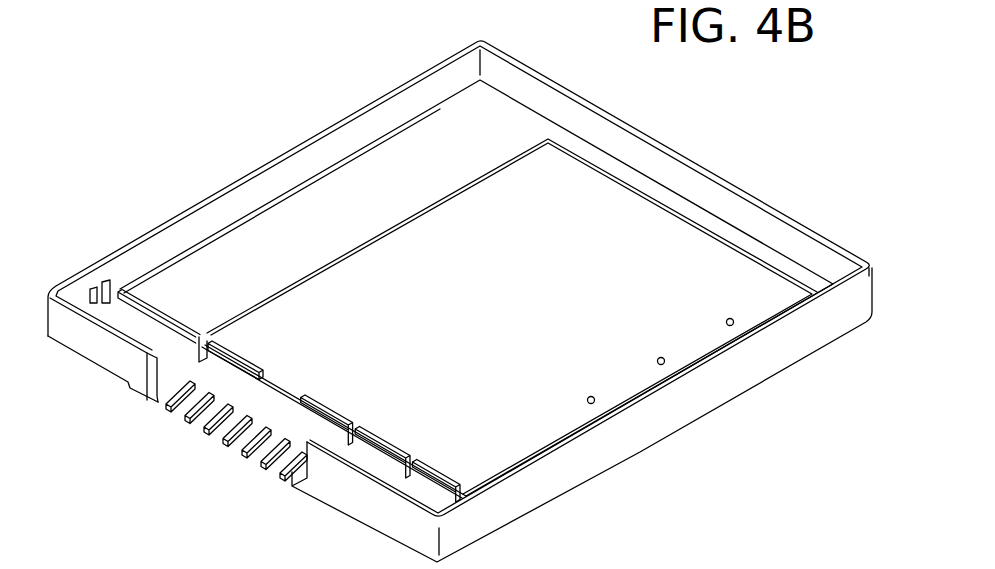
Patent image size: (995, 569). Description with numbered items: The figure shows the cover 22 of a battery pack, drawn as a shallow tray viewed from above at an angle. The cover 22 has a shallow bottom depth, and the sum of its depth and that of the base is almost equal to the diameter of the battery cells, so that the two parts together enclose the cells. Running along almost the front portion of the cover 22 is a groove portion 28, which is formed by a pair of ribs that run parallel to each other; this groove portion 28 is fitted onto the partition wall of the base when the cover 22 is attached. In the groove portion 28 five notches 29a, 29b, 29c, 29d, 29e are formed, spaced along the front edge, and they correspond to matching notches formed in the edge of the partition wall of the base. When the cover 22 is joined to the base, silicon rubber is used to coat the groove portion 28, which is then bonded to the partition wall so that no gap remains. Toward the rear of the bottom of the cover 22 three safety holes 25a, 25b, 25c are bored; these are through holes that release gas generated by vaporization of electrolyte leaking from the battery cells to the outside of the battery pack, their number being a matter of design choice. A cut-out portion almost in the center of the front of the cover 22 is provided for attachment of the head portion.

The cover 22 is at (712, 447).
The safety hole 25a is at (726, 318).
The safety hole 25b is at (658, 358).
The safety hole 25c is at (588, 397).
The groove portion 28 is at (206, 332).
The notch 29a is at (120, 288).
The notch 29b is at (211, 343).
The notch 29c is at (357, 424).
The notch 29d is at (415, 458).
The notch 29e is at (465, 485).